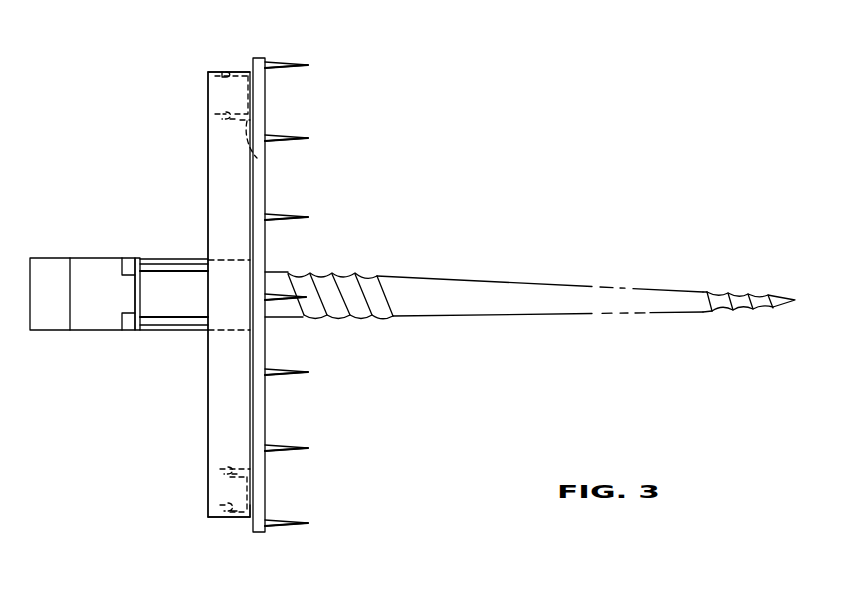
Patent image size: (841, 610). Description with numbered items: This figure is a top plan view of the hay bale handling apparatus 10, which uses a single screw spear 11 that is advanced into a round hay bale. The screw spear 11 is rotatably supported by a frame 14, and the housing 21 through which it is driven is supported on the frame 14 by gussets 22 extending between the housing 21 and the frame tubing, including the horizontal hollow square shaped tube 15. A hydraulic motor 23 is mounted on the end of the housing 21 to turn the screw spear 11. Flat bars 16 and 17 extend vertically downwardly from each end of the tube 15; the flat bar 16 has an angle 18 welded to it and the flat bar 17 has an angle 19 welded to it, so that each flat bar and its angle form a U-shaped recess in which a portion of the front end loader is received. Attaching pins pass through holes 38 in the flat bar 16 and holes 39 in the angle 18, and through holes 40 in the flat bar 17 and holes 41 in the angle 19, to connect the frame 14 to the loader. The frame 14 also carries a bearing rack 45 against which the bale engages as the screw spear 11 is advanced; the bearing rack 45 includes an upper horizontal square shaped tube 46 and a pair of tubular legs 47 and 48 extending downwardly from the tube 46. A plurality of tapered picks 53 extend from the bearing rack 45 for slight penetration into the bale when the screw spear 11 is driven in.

The hay bale handling apparatus 10 is at (413, 213).
The screw spear 11 is at (382, 315).
The frame 14 is at (207, 407).
The horizontal hollow square shaped tube 15 is at (227, 157).
The flat bar 16 is at (242, 71).
The flat bar 17 is at (242, 518).
The angle 18 is at (256, 156).
The angle 19 is at (237, 467).
The housing 21 is at (192, 331).
The gussets 22 is at (180, 264).
The hydraulic motor 23 is at (98, 258).
The holes 38 is at (227, 69).
The holes 39 is at (226, 121).
The holes 40 is at (222, 504).
The holes 41 is at (222, 460).
The bearing rack 45 is at (277, 187).
The upper horizontal square shaped tube 46 is at (267, 108).
The leg 47 is at (263, 70).
The leg 48 is at (256, 507).
The picks 53 is at (302, 522).